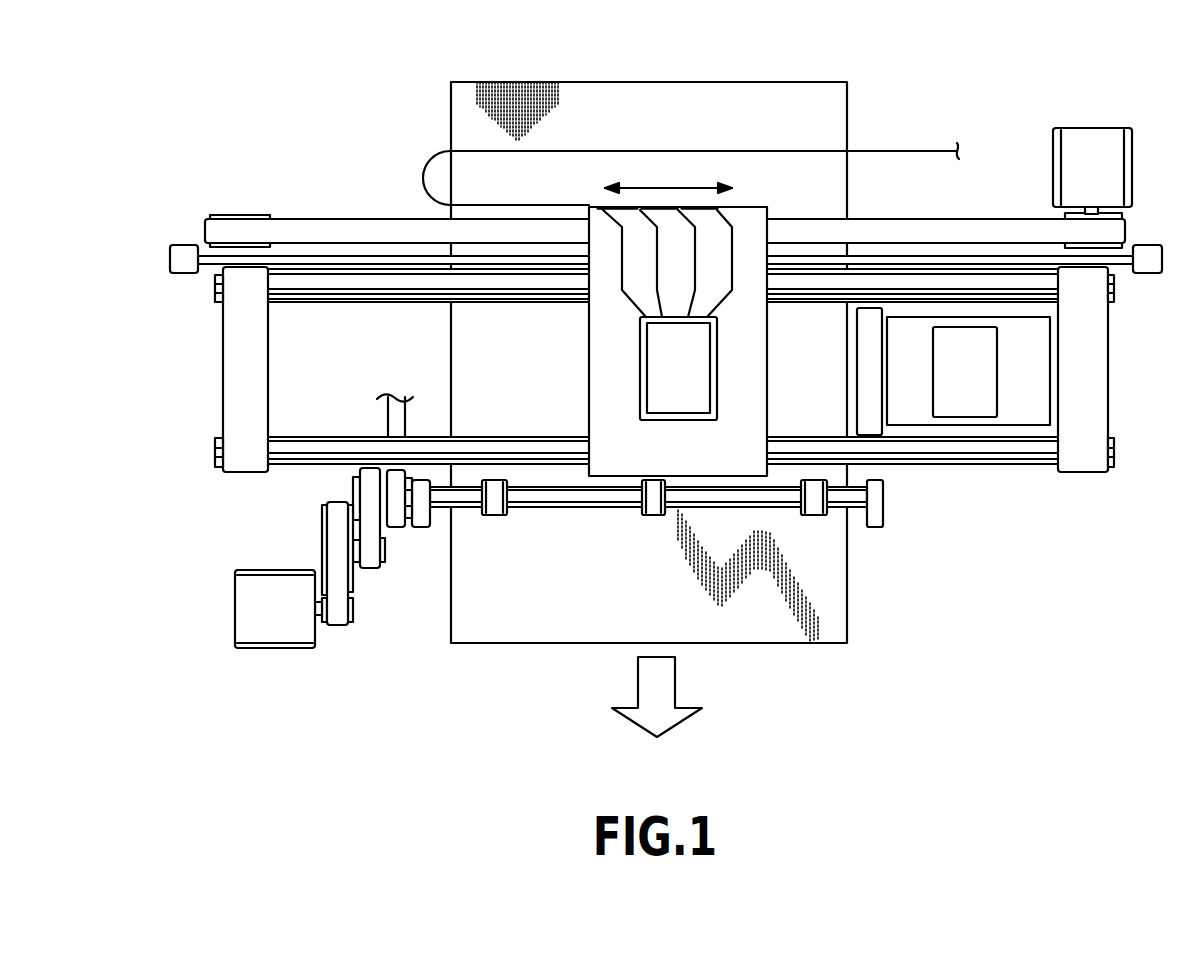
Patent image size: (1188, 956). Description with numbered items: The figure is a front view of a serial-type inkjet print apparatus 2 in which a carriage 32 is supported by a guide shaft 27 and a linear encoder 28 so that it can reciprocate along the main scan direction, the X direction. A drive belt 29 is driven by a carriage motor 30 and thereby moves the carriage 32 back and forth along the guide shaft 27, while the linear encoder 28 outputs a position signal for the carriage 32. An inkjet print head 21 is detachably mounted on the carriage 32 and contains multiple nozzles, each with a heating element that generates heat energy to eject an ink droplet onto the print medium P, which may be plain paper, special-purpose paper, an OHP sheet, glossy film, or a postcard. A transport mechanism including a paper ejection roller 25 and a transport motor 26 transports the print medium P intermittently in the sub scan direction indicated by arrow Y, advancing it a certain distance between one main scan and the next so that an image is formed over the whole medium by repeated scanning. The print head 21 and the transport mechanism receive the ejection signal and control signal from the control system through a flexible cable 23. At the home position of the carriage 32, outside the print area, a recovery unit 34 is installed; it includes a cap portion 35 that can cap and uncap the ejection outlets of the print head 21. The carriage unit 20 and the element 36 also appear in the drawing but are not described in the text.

The printing apparatus 2 is at (940, 79).
The print medium P is at (655, 82).
The carriage 20 is at (706, 388).
The inkjet print head 21 is at (679, 420).
The flexible cable 23 is at (430, 157).
The paper ejection roller 25 is at (540, 510).
The transport motor 26 is at (275, 649).
The guide shaft 27 is at (340, 297).
The linear encoder 28 is at (212, 268).
The drive belt 29 is at (303, 218).
The carriage motor 30 is at (1093, 118).
The carriage 32 is at (767, 348).
The recovery unit 34 is at (968, 428).
The cap portion 35 is at (965, 417).
The wiper 36 is at (856, 400).